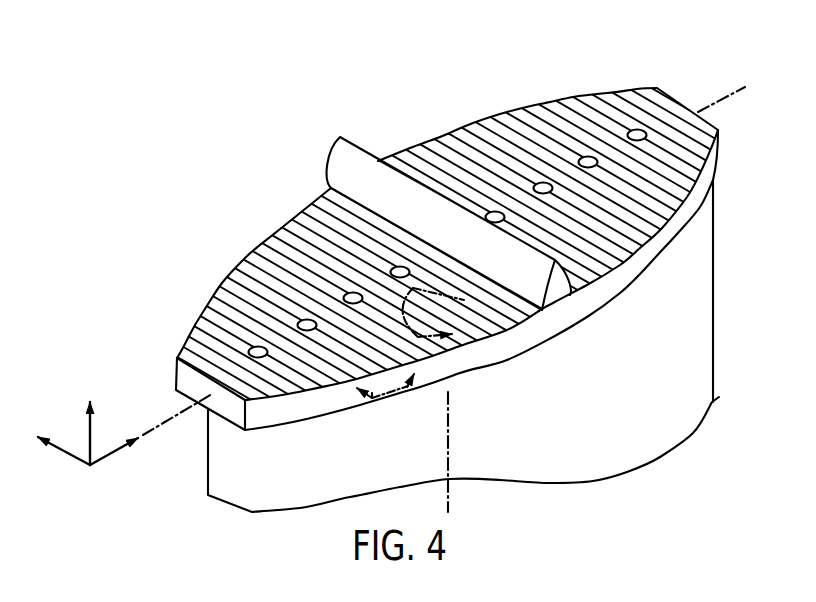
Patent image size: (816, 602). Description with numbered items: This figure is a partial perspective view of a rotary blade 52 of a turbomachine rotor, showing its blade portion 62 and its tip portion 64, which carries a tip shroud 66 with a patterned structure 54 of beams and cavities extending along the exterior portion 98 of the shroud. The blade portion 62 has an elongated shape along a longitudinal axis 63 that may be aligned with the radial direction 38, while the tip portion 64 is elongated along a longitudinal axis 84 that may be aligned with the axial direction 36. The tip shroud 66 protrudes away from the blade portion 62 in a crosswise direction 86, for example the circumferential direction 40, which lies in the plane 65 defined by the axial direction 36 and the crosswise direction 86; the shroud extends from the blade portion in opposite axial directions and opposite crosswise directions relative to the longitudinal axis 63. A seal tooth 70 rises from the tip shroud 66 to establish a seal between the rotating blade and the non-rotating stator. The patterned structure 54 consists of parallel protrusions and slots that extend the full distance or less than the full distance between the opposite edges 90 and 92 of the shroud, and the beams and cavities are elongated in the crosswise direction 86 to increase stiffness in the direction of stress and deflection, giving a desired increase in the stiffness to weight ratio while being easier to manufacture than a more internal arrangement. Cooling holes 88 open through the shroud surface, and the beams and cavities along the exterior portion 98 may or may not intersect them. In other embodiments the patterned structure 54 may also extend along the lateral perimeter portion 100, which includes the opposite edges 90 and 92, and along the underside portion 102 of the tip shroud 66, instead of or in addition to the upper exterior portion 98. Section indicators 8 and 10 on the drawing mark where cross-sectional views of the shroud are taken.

The rotary blade 52 is at (447, 301).
The patterned structure 54 is at (447, 301).
The blade portion 62 is at (714, 311).
The longitudinal axis 63 is at (448, 430).
The tip portion 64 is at (228, 246).
The tip shroud 66 is at (465, 126).
The seal tooth 70 is at (337, 153).
The longitudinal axis 84 is at (160, 421).
The cooling holes 88 is at (588, 157).
The edge 90 is at (412, 145).
The edge 92 is at (447, 280).
The exterior portion 98 is at (223, 290).
The lateral perimeter portion 100 is at (479, 305).
The underside portion 102 is at (643, 272).
The section line 8- 8 is at (440, 317).
The section line 10- 10 is at (400, 404).
The axial direction 36 is at (112, 458).
The radial direction 38 is at (92, 438).
The circumferential direction 40 is at (61, 480).
The crosswise direction 86 is at (70, 458).
The plane 65 is at (88, 472).